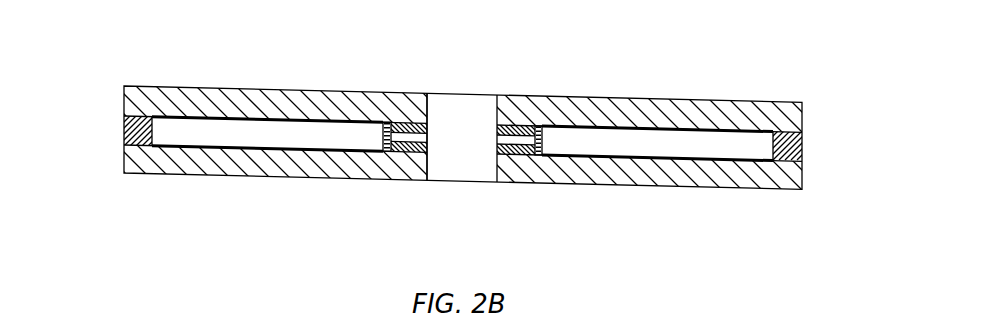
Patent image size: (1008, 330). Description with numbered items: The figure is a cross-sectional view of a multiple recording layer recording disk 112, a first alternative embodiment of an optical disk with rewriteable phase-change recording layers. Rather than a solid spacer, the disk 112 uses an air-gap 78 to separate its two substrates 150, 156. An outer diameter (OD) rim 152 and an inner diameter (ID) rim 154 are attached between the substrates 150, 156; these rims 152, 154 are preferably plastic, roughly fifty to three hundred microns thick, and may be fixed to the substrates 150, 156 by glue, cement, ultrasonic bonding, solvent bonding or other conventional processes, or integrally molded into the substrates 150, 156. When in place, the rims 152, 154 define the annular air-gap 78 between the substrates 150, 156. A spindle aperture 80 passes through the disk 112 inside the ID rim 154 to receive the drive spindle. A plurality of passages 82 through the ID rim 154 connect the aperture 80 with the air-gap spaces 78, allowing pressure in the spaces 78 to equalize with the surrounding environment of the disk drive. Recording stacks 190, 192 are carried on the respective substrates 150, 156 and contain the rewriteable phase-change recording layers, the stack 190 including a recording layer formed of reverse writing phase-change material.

The air-gap 78 is at (197, 133).
The spindle aperture 80 is at (467, 178).
The passages 82 is at (518, 140).
The multiple recording layer recording disk 112 is at (333, 195).
The substrate 150 is at (134, 155).
The outer diameter (OD) rim 152 is at (134, 126).
The inner diameter (ID) rim 154 is at (428, 127).
The substrate 156 is at (134, 92).
The recording stack 190 is at (732, 162).
The recording stack 192 is at (745, 130).